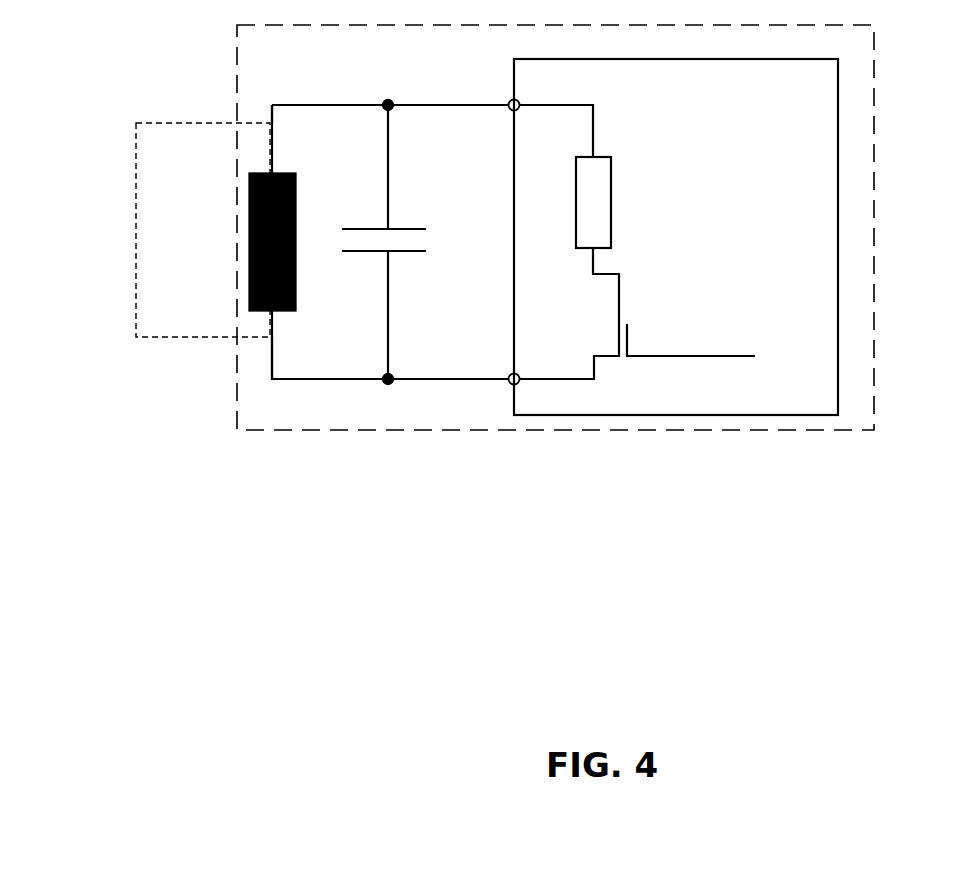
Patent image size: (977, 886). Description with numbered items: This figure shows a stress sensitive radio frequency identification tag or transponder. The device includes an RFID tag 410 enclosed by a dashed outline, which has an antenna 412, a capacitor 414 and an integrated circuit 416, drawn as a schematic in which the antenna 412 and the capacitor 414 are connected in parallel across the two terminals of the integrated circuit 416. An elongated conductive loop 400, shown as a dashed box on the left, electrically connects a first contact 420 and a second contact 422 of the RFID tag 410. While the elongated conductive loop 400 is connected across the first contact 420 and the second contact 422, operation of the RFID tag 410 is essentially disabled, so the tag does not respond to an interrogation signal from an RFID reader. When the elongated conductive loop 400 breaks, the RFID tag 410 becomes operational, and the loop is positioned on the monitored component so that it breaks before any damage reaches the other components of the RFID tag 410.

The elongated conductive loop 400 is at (136, 270).
The radio frequency identification tag 410 is at (875, 133).
The antenna 412 is at (282, 173).
The capacitor 414 is at (410, 252).
The integrated circuit 416 is at (676, 237).
The first contact 420 is at (272, 123).
The second contact 422 is at (270, 337).